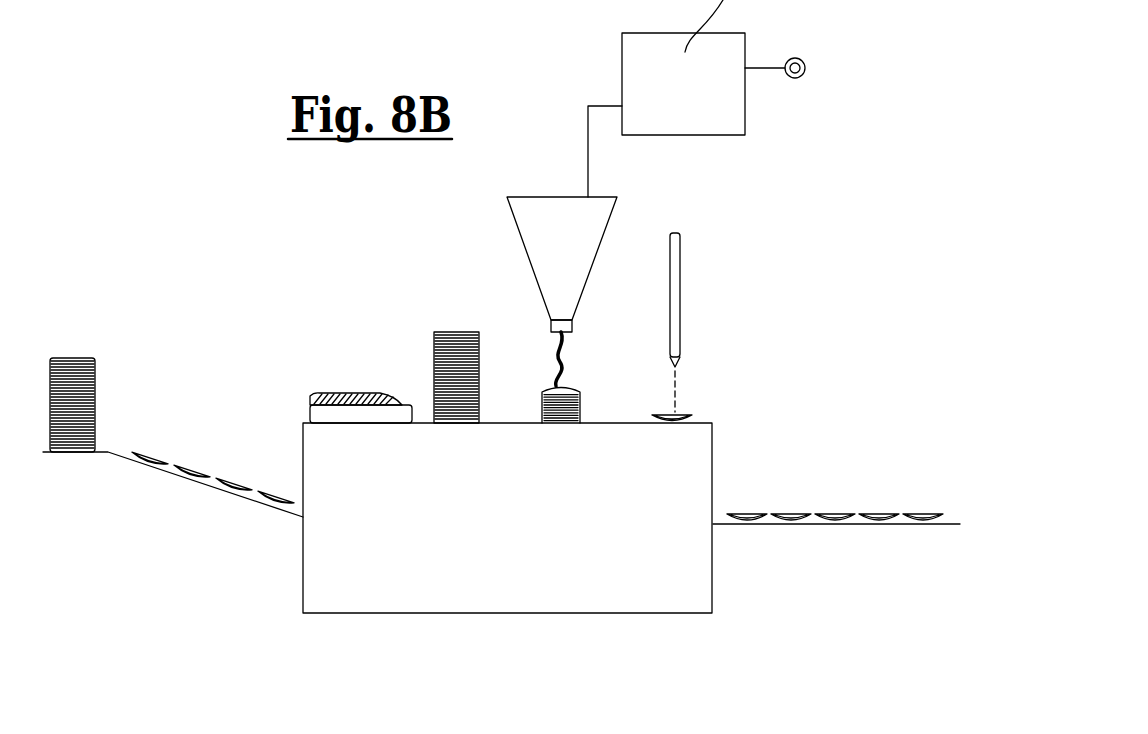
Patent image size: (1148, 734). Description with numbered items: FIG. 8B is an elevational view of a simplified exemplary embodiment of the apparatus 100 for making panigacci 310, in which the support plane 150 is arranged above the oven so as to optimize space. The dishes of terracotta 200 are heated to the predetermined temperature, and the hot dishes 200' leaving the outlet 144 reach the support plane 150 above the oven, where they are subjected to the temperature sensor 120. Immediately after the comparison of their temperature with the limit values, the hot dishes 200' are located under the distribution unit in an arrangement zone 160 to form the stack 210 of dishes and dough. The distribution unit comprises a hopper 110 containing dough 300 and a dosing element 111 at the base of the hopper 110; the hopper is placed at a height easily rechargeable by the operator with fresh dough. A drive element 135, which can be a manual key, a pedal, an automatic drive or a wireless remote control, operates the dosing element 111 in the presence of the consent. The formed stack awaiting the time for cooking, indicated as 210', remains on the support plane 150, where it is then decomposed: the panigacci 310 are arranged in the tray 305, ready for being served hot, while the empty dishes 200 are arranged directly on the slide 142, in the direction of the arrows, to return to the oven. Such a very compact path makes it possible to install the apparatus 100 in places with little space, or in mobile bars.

The apparatus 100 is at (258, 235).
The hopper 110 is at (550, 208).
The dosing element 111 is at (550, 324).
The temperature sensor 120 is at (676, 325).
The drive element 135 is at (800, 59).
The slide 142 is at (210, 485).
The outlet 144 is at (855, 528).
The support plane 150 is at (395, 7).
The arrangement zone 160 is at (566, 428).
The dishes of terracotta 200 is at (172, 394).
The hot dishes 200' is at (797, 437).
The stack of dishes and dough 210 is at (592, 386).
The formed stack awaiting cooking 210' is at (434, 345).
The dough 300 is at (555, 385).
The tray 305 is at (308, 413).
The panigacci 310 is at (330, 393).